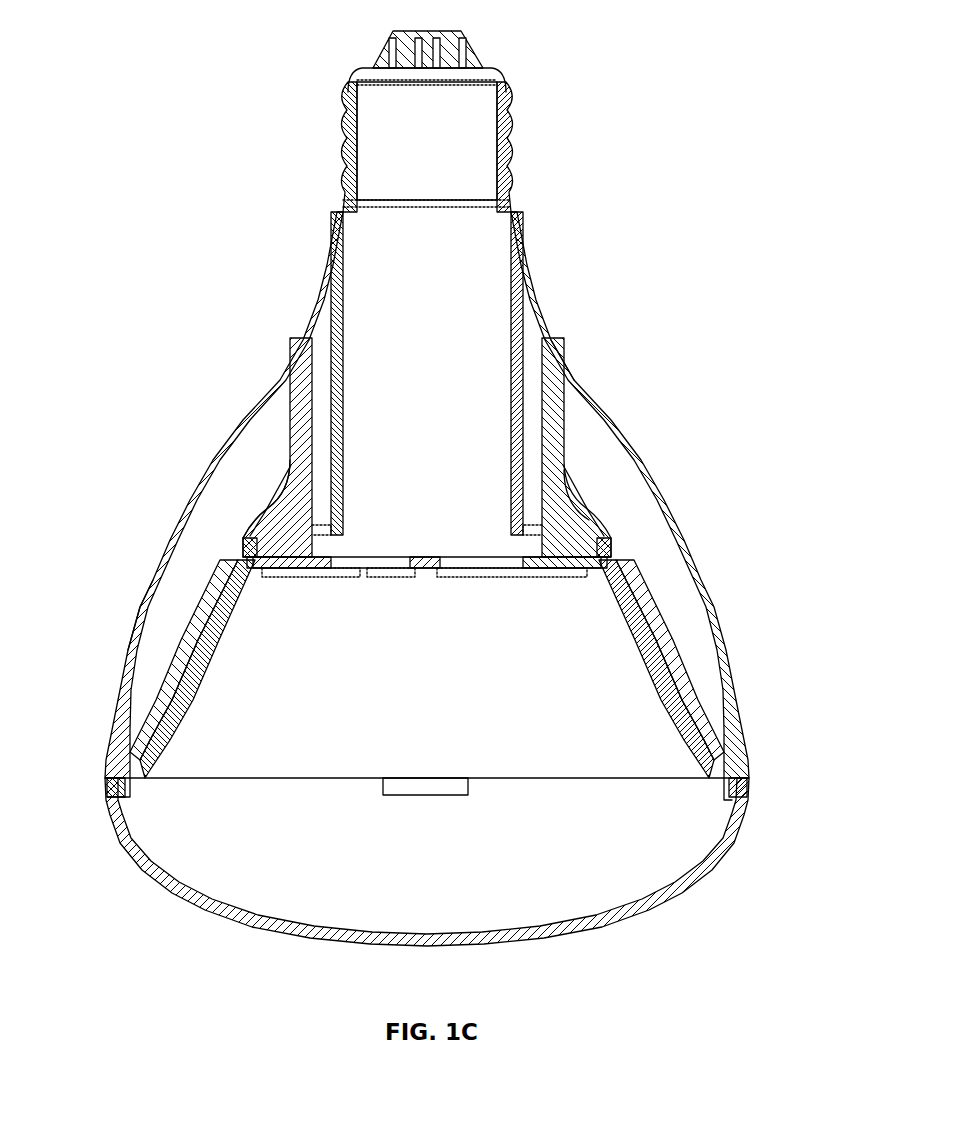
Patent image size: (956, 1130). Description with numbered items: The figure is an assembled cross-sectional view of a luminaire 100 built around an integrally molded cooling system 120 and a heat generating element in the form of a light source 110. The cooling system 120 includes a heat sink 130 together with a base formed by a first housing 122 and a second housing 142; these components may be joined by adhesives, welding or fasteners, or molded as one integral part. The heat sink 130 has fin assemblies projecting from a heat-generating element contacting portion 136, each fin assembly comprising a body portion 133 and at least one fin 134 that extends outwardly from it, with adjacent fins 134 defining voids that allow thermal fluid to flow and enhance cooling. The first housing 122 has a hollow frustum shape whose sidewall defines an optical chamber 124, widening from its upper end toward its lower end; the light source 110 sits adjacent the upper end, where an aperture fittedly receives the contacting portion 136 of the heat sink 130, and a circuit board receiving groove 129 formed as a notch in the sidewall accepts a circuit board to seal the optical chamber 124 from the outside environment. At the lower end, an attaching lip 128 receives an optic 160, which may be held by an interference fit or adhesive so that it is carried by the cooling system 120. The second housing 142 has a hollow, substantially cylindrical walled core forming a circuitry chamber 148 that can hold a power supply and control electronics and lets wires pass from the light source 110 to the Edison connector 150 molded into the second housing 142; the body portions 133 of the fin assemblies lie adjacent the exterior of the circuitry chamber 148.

The luminaire 100 is at (193, 36).
The light source 110 is at (572, 496).
The integrally molded cooling system 120 is at (592, 357).
The first housing 122 is at (210, 785).
The optical chamber 124 is at (301, 756).
The attaching lip 128 is at (110, 778).
The circuit board receiving groove 129 is at (245, 560).
The heat sink 130 is at (282, 397).
The body portion 133 is at (637, 622).
The fin 134 is at (150, 625).
The heat-generating element contacting portion 136 is at (275, 512).
The second housing 142 is at (535, 262).
The circuitry chamber 148 is at (383, 336).
The Edison connector 150 is at (352, 108).
The optic 160 is at (722, 838).